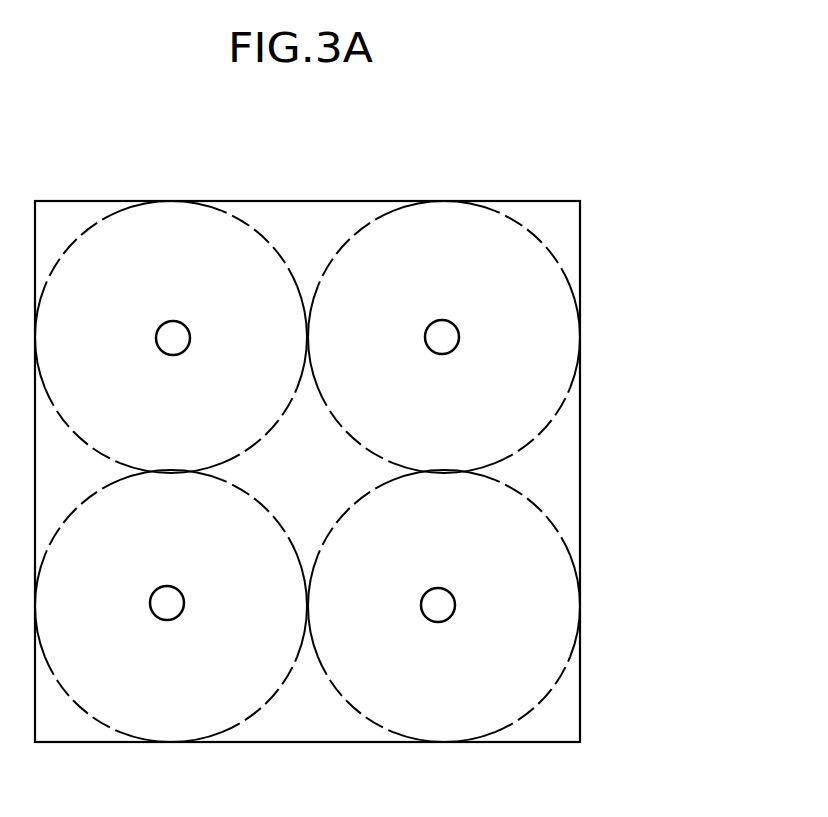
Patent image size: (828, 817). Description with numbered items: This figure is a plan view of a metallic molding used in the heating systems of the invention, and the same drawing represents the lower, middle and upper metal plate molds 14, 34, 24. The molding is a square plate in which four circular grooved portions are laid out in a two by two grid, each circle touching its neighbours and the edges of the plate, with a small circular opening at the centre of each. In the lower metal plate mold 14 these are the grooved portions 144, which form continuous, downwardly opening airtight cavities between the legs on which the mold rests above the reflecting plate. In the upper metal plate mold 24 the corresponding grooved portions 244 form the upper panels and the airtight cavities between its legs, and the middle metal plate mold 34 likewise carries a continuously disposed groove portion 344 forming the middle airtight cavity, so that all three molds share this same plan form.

The metal plate mold 14 is at (313, 429).
The upper metal plate mold 24 is at (313, 429).
The middle metal plate mold 34 is at (492, 192).
The grooved portion 144 is at (410, 471).
The grooved portion 244 is at (410, 471).
The circular region / cell 344 is at (530, 377).